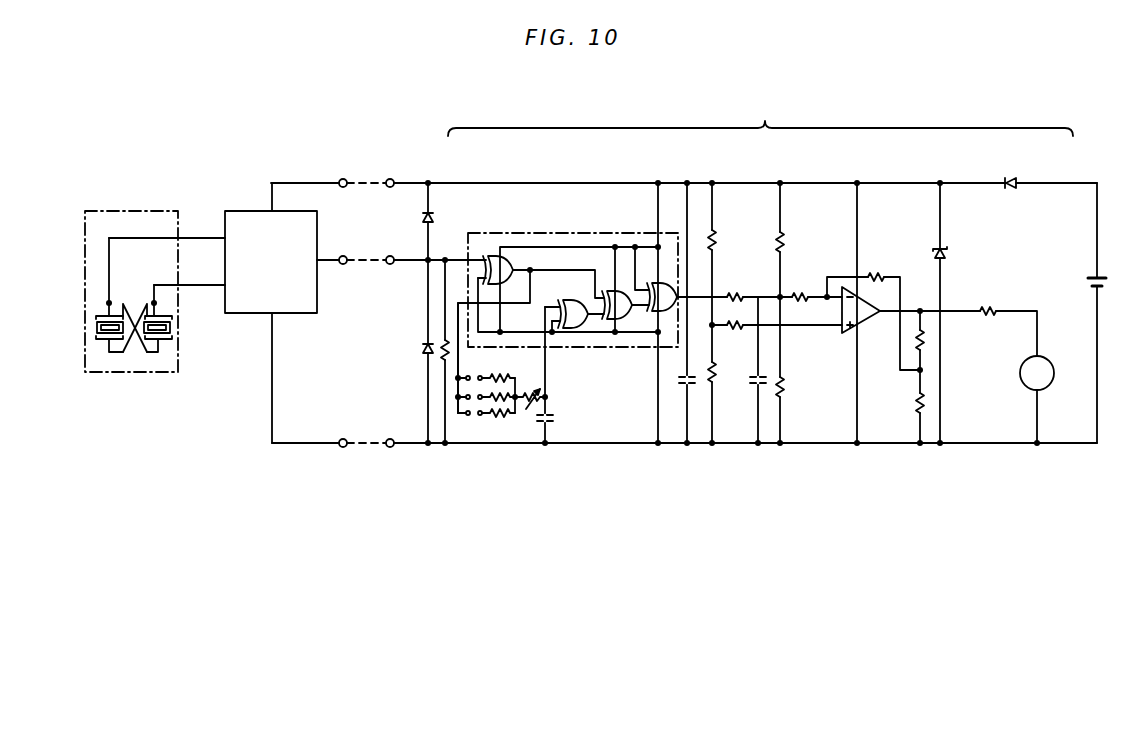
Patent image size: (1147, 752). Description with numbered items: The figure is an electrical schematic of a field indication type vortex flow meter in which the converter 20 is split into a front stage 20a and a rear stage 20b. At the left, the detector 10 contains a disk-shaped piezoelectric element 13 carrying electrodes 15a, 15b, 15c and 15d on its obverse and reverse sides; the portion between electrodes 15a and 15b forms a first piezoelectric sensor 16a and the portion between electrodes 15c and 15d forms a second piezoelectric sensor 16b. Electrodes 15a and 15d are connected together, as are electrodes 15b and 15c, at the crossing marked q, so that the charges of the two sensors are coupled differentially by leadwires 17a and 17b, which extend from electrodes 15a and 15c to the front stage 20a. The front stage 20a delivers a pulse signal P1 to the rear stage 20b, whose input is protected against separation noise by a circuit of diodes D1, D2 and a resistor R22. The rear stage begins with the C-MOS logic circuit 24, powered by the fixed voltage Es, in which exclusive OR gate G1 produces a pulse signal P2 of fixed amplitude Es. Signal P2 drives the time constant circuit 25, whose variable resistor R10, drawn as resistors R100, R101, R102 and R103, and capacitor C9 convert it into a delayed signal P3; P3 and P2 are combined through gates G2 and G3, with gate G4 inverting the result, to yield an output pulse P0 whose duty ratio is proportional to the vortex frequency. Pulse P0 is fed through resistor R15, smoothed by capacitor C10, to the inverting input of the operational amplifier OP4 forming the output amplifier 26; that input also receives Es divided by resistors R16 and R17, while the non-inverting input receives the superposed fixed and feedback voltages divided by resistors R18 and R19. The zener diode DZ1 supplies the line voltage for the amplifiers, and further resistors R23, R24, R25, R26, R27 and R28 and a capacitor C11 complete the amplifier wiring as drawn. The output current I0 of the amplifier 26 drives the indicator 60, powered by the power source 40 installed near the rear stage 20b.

The detector 10 is at (117, 215).
The piezoelectric element 13 is at (97, 330).
The electrode 15a is at (96, 318).
The electrode 15b is at (100, 338).
The electrode 15c is at (170, 318).
The electrode 15d is at (168, 338).
The first piezoelectric sensor 16a is at (102, 349).
The second piezoelectric sensor 16b is at (163, 352).
The leadwire 17a is at (108, 248).
The leadwire 17b is at (154, 286).
The lead crossing q is at (175, 240).
The converter 20 is at (528, 113).
The front stage 20a is at (271, 262).
The rear stage 20b is at (760, 117).
The pulse signal P1 is at (347, 264).
The diode D1 is at (424, 214).
The diode D2 is at (422, 356).
The resistor R22 is at (438, 362).
The logic circuit 24 is at (554, 244).
The exclusive OR gate G1 is at (492, 256).
The exclusive OR gate G2 is at (610, 290).
The exclusive OR gate G3 is at (571, 300).
The gate G4 is at (656, 282).
The pulse signal P2 is at (530, 266).
The output pulse signal P0 is at (634, 312).
The signal P3 is at (547, 398).
The time constant circuit 25 is at (555, 379).
The variable resistor R100 is at (528, 404).
The resistor R101 is at (493, 382).
The resistor R102 is at (490, 400).
The resistor R103 is at (503, 405).
The variable resistor R10 is at (586, 512).
The capacitor C9 is at (553, 421).
The voltage-dividing resistor R17 is at (716, 243).
The resistor R15 is at (735, 296).
The resistor R23 is at (738, 330).
The voltage-dividing resistor R18 is at (717, 386).
The capacitor C11 is at (682, 382).
The capacitor C10 is at (757, 388).
The voltage-dividing resistor R19 is at (786, 246).
The resistor R24 is at (802, 292).
The voltage-dividing resistor R16 is at (785, 394).
The feedback resistor R25 is at (879, 273).
The operational amplifier OP4 is at (862, 328).
The output amplifier 26 is at (866, 313).
The fixed voltage Es is at (939, 187).
The zener diode DZ1 is at (948, 253).
The resistor R28 is at (983, 310).
The resistor R26 is at (926, 340).
The resistor R27 is at (926, 405).
The output current I0 is at (998, 357).
The power source 40 is at (1090, 287).
The indicator 60 is at (1055, 373).